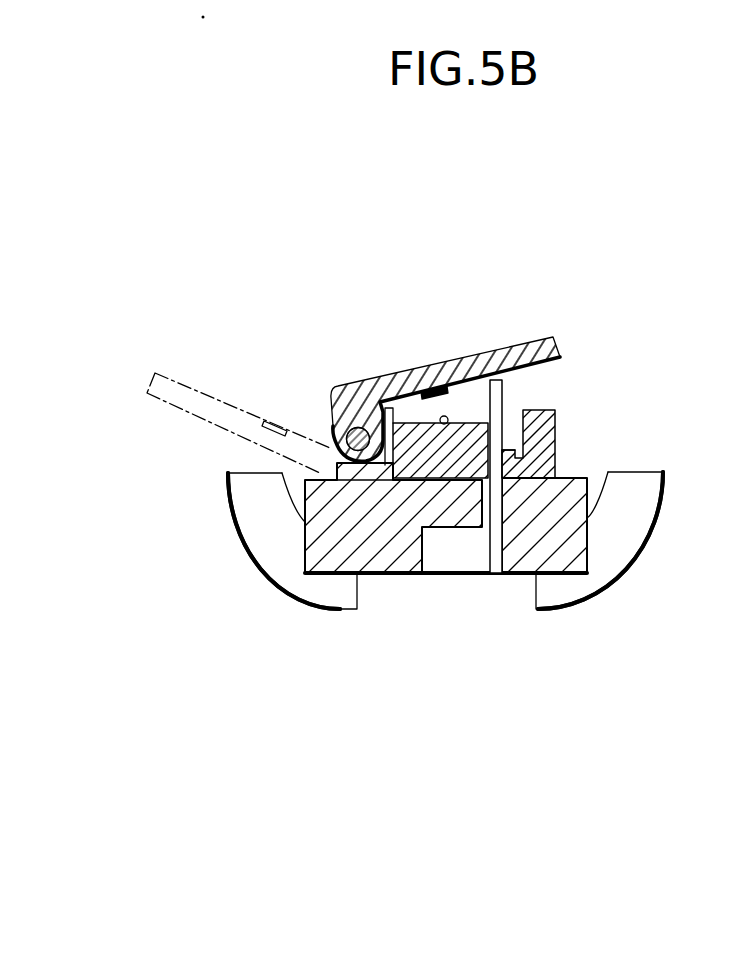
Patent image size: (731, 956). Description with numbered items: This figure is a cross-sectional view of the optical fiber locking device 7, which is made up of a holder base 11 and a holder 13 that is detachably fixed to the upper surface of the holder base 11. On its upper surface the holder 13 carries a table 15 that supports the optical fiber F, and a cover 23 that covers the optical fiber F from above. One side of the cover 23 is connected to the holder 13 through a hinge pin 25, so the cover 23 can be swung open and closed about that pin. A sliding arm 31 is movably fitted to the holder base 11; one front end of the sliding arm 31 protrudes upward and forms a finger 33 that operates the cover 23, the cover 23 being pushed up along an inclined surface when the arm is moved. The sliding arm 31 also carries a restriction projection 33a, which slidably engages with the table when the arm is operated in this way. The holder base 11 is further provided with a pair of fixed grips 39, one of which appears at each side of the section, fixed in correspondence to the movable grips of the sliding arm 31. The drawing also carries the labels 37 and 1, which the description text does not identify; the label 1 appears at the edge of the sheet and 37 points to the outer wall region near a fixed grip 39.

The optical fiber locking device 7 is at (518, 275).
The apparatus 1 is at (722, 456).
The holder base 11 is at (388, 568).
The holder 13 is at (557, 435).
The table 15 is at (417, 413).
The cover 23 is at (374, 381).
The hinge pin 25 is at (341, 446).
The sliding arm 31 is at (458, 587).
The finger 33 is at (503, 382).
The restriction projection 33a is at (510, 447).
The housing 37 is at (479, 575).
The fixed grips 39 is at (263, 573).
The optical fiber F is at (444, 416).